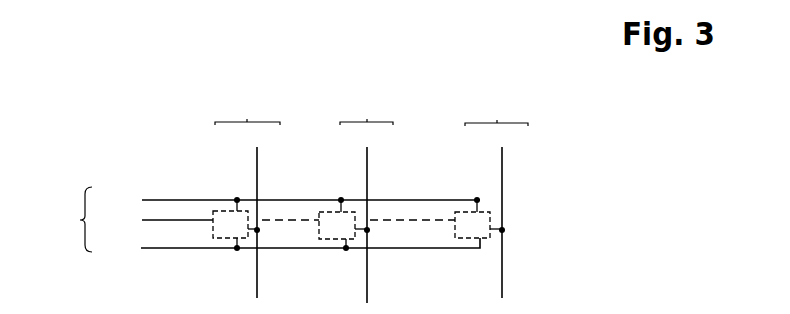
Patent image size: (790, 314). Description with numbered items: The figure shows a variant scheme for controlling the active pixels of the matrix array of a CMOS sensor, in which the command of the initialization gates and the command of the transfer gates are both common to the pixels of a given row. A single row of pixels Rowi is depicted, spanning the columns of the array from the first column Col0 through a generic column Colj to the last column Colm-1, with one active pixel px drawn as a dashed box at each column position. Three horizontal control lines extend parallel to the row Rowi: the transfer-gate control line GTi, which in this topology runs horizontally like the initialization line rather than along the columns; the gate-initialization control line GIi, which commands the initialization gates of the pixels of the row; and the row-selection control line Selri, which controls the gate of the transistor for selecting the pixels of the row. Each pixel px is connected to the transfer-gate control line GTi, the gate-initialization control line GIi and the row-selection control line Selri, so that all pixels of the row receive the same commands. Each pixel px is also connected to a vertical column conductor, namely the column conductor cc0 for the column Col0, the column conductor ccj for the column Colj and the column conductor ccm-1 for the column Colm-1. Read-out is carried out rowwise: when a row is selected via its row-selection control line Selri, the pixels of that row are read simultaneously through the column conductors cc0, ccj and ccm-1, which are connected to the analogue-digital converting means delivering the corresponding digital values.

The active pixel px is at (218, 211).
The row of pixels Rowi is at (80, 221).
The transfer-gate control line GTi is at (293, 197).
The gate-initialization control line GIi is at (281, 219).
The row-selection control line Selri is at (290, 245).
The column of pixels Col0 is at (247, 109).
The column of pixels Colj is at (366, 109).
The column of pixels Colm-1 is at (498, 109).
The column conductor cc0 is at (269, 212).
The column conductor ccj is at (381, 214).
The column conductor ccm-1 is at (526, 212).